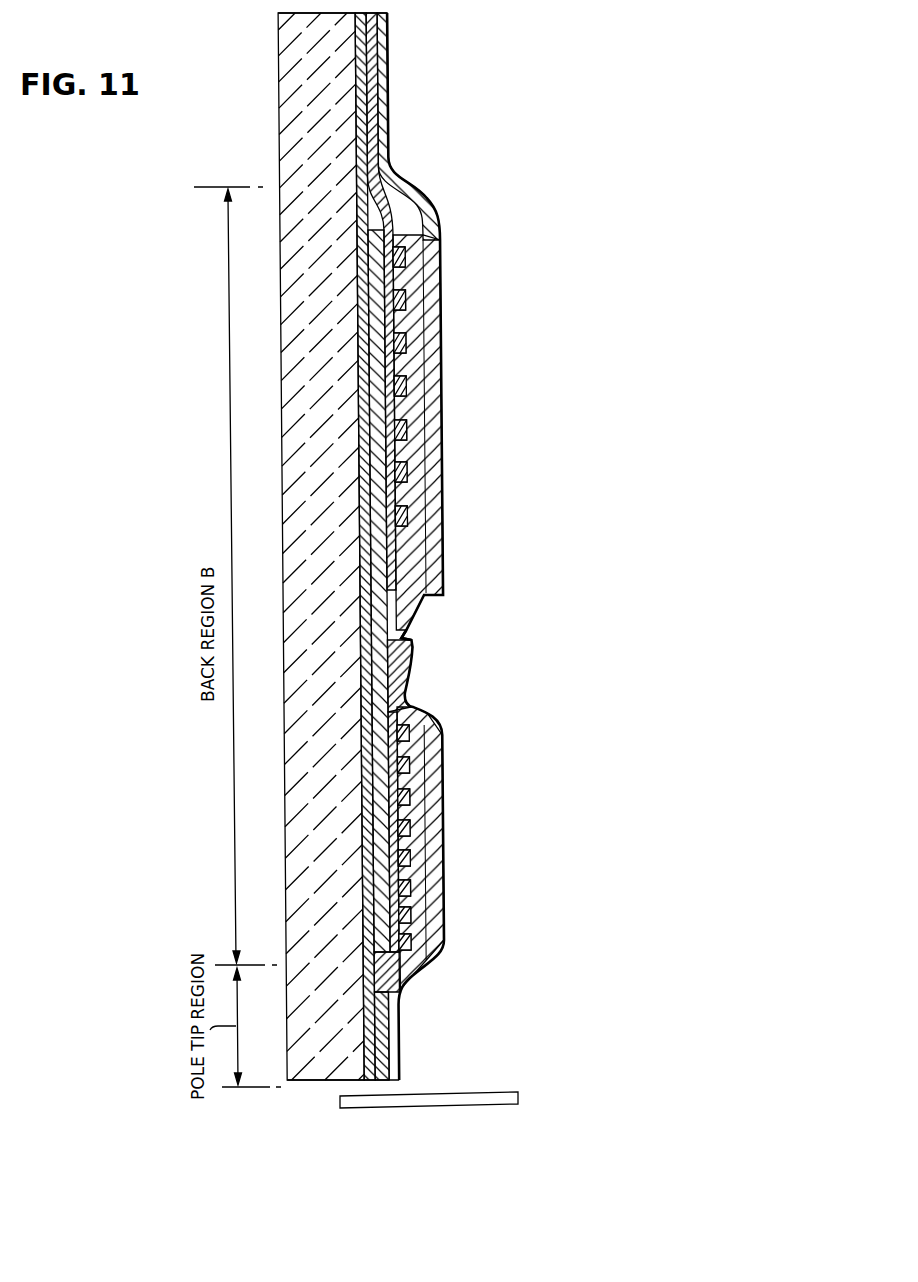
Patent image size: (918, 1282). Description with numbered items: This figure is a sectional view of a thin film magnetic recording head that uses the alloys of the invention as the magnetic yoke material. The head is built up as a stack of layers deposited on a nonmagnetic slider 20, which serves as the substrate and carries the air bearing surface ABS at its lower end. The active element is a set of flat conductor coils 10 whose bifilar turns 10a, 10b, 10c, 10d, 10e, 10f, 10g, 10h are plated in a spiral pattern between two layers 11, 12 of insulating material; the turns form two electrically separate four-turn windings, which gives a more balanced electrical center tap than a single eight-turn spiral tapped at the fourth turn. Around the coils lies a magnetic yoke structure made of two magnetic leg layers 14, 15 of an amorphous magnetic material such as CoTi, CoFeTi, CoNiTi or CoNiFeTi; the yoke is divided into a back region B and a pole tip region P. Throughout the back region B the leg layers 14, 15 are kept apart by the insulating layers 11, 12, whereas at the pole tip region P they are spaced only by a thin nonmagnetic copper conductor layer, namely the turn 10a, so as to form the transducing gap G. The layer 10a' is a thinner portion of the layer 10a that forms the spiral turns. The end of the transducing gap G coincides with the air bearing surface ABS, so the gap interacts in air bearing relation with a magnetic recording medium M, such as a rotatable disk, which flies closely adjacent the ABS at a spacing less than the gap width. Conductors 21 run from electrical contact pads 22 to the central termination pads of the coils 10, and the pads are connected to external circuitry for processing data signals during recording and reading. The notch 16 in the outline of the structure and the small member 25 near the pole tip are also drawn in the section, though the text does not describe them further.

The flat conductor coils 10 is at (490, 240).
The bifilar turn 10a is at (441, 600).
The bifilar turn 10b is at (404, 302).
The bifilar turn 10c is at (404, 345).
The bifilar turn 10d is at (404, 388).
The bifilar turn 10e is at (404, 432).
The bifilar turn 10f is at (404, 474).
The bifilar turn 10g is at (404, 518).
The bifilar turn 10h is at (404, 733).
The thinner conductor layer portion 10a' is at (415, 1036).
The insulating layer 11 is at (362, 62).
The insulating layer 12 is at (412, 575).
The magnetic leg layer 14 is at (375, 616).
The magnetic leg layer 15 is at (402, 668).
The recess 16 is at (424, 640).
The nonmagnetic slider 20 is at (290, 121).
The conductors 21 is at (383, 83).
The electrical contact pads 22 is at (372, 48).
The layer 25 is at (378, 950).
The back region B is at (505, 765).
The pole tip region P is at (450, 1044).
The transducing gap G is at (396, 1087).
The magnetic recording medium M is at (518, 1097).
The air bearing surface ABS is at (327, 1094).